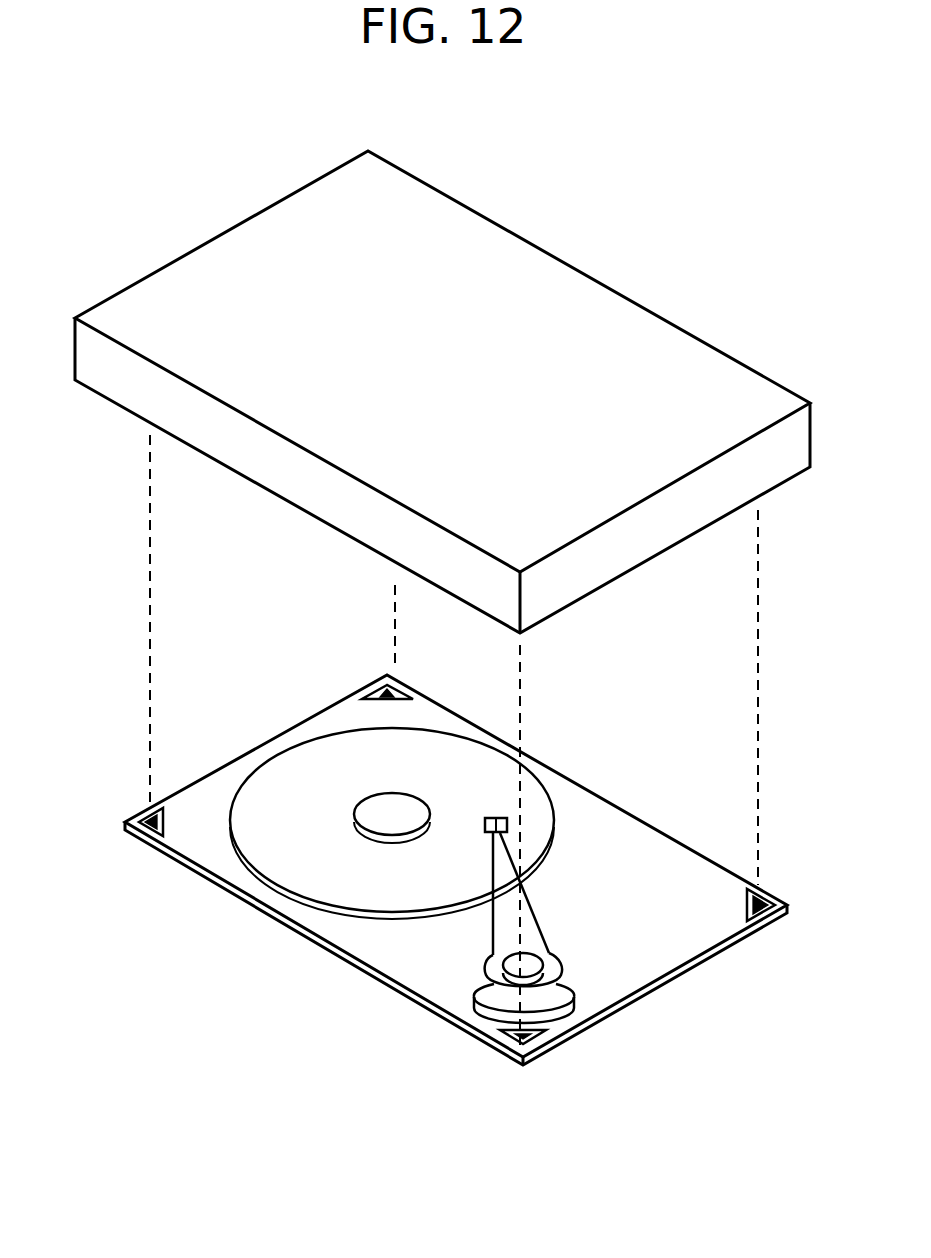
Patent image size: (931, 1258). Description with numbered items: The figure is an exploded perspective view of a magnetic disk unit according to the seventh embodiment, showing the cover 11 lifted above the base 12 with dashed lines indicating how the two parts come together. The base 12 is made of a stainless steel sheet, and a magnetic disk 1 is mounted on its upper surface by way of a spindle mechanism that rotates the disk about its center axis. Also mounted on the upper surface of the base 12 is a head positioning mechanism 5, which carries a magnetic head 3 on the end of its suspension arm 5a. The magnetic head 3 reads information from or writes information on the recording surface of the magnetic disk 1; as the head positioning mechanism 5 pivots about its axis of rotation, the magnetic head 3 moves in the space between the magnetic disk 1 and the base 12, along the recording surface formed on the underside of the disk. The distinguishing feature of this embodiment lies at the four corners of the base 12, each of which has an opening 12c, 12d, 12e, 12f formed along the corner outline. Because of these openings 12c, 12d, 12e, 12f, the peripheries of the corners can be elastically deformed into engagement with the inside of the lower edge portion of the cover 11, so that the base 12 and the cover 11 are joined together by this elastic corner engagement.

The magnetic disk 1 is at (332, 900).
The magnetic head 3 is at (388, 812).
The head positioning mechanism 5 is at (532, 914).
The suspension arm 5a is at (537, 907).
The cover 11 is at (517, 313).
The base 12 is at (637, 948).
The opening 12c is at (543, 1047).
The opening 12d is at (775, 917).
The opening 12e is at (380, 683).
The opening 12f is at (140, 832).